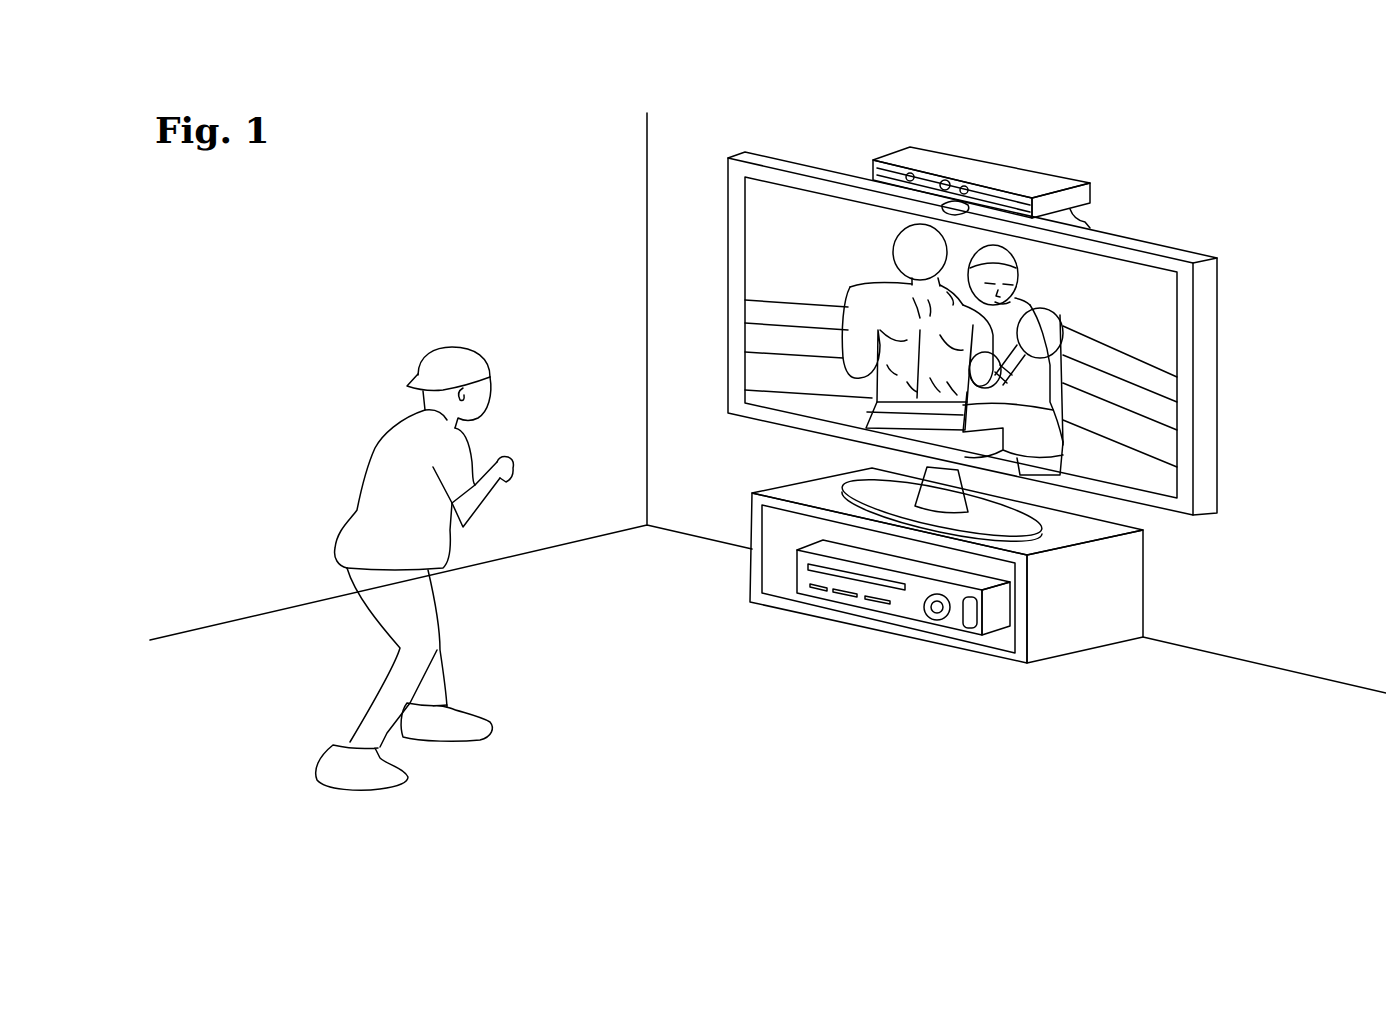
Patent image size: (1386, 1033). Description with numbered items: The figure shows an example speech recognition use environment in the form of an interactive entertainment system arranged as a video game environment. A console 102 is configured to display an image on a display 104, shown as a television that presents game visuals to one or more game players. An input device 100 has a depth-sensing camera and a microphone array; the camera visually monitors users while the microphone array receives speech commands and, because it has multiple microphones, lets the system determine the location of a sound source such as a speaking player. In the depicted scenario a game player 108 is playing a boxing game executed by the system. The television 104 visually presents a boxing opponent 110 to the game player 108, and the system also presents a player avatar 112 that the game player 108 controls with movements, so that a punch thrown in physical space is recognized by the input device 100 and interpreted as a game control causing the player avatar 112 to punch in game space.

The input device 100 is at (956, 163).
The console 102 is at (911, 617).
The display 104 is at (1220, 336).
The game player 108 is at (440, 660).
The boxing opponent 110 is at (1020, 283).
The player avatar 112 is at (848, 292).